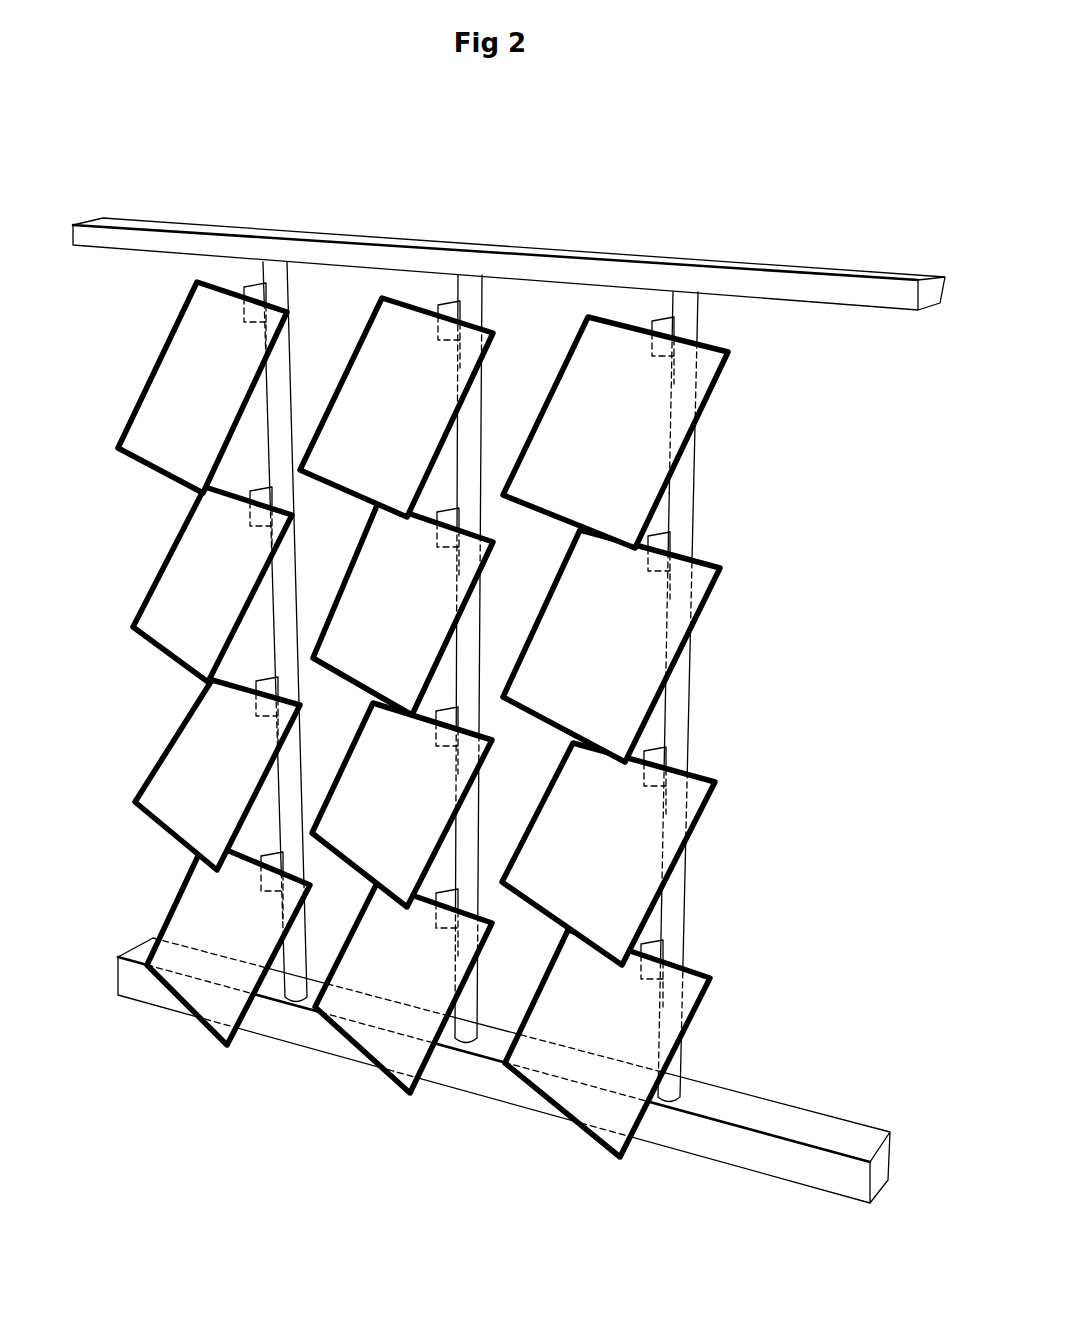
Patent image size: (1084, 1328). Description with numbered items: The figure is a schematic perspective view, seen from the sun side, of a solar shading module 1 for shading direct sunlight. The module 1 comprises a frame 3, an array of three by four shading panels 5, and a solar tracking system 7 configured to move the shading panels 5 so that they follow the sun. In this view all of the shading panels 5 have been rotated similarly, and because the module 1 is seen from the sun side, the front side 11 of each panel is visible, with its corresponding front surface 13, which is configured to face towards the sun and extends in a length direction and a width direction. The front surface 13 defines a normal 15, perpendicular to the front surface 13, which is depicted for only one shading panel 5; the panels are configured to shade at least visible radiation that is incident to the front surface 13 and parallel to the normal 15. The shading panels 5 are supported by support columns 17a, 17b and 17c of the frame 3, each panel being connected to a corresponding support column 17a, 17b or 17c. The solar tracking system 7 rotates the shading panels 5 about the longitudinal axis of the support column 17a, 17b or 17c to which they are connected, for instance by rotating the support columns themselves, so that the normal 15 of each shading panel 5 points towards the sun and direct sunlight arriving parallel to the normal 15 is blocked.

The solar shading module 1 is at (560, 192).
The frame 3 is at (806, 268).
The shading panels 5 is at (150, 371).
The solar tracking system 7 is at (810, 1166).
The front side 11 is at (399, 698).
The front surface 13 is at (142, 436).
The normal 15 is at (205, 343).
The support column 17a is at (690, 507).
The support column 17b is at (467, 428).
The support column 17c is at (282, 580).